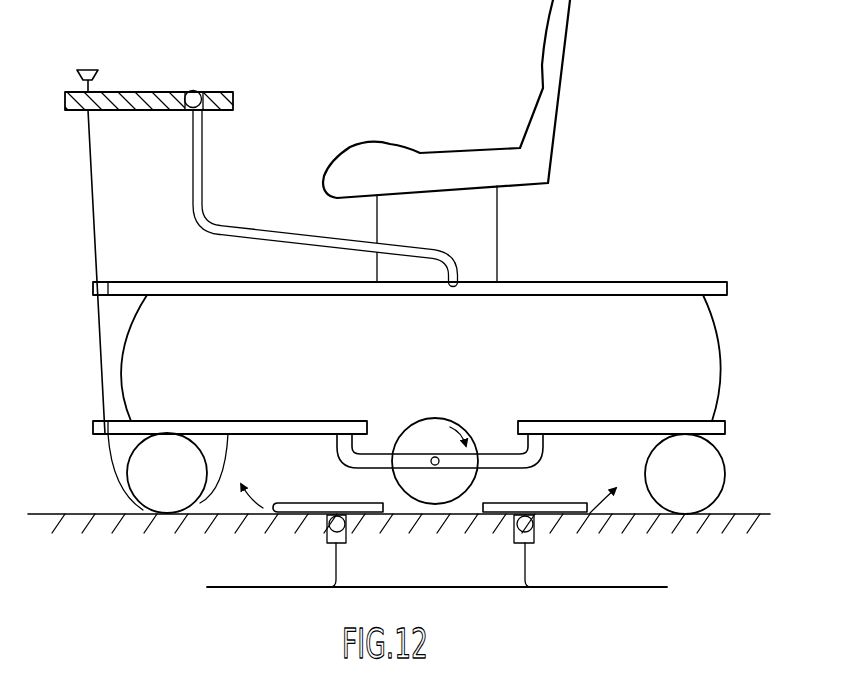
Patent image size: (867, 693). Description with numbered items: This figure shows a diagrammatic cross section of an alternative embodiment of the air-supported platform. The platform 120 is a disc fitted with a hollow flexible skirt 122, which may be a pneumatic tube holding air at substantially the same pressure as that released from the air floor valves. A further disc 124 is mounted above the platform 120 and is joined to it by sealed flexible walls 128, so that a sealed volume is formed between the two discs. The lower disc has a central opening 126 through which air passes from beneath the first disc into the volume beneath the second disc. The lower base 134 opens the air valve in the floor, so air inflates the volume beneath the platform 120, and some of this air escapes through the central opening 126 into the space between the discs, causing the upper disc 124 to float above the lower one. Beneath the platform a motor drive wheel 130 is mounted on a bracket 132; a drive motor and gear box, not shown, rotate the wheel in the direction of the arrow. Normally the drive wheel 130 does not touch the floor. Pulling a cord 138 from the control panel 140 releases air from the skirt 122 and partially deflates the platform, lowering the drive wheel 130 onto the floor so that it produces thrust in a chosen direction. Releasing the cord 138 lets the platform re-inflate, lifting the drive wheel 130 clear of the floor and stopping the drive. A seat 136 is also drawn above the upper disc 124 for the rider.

The platform 120 is at (208, 428).
The hollow flexible skirt 122 is at (146, 516).
The further disc 124 is at (215, 285).
The central opening 126 is at (500, 430).
The sealed flexible walls 128 is at (722, 368).
The motor drive wheel 130 is at (405, 478).
The bracket 132 is at (523, 460).
The lower base 134 is at (565, 513).
The seat 136 is at (465, 165).
The cord 138 is at (98, 228).
The control panel 140 is at (153, 92).